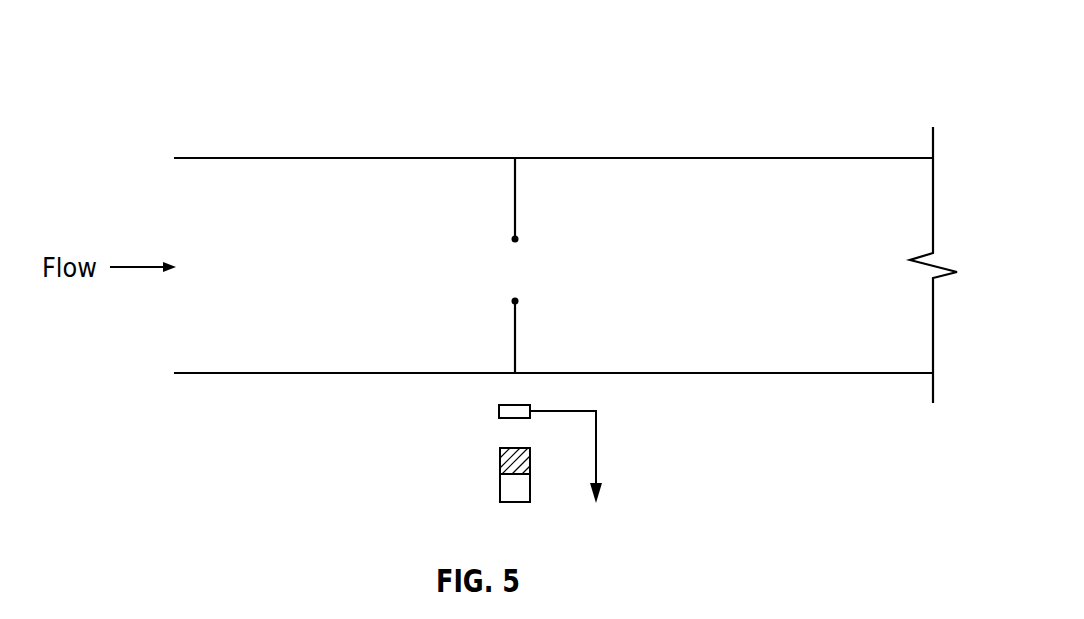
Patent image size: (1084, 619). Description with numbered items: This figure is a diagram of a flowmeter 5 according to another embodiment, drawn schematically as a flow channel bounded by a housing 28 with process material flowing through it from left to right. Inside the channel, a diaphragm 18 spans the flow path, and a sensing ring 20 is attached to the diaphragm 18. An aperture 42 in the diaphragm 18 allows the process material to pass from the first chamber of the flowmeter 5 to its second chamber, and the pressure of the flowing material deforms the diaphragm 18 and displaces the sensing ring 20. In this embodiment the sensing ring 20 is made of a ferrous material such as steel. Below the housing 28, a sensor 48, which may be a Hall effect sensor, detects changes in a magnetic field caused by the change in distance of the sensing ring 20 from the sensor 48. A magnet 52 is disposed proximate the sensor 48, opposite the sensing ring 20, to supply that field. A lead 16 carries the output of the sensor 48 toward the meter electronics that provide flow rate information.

The flowmeter 5 is at (178, 52).
The housing 28 is at (344, 158).
The diaphragm 18 is at (516, 200).
The sensing ring 20 is at (512, 241).
The aperture 42 is at (516, 270).
The sensor 48 is at (498, 412).
The lead 16 is at (598, 456).
The magnet 52 is at (500, 486).